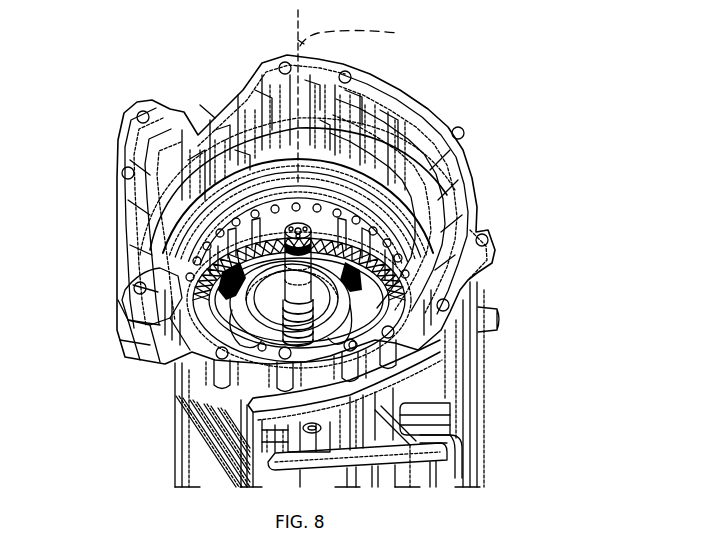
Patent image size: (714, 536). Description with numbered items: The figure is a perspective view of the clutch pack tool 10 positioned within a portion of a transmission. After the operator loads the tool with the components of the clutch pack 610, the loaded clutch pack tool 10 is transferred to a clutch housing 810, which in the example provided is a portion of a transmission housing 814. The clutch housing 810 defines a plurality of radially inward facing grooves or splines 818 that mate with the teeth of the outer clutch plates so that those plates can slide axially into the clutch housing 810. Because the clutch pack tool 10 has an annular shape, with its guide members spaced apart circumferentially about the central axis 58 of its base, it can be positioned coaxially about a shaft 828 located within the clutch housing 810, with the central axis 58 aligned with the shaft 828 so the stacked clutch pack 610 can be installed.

The clutch pack tool 10 is at (222, 281).
The central axis 58 is at (361, 34).
The clutch pack 610 is at (372, 256).
The clutch housing 810 is at (207, 348).
The transmission housing 814 is at (177, 437).
The radially inward facing grooves or splines 818 is at (233, 232).
The shaft 828 is at (306, 228).